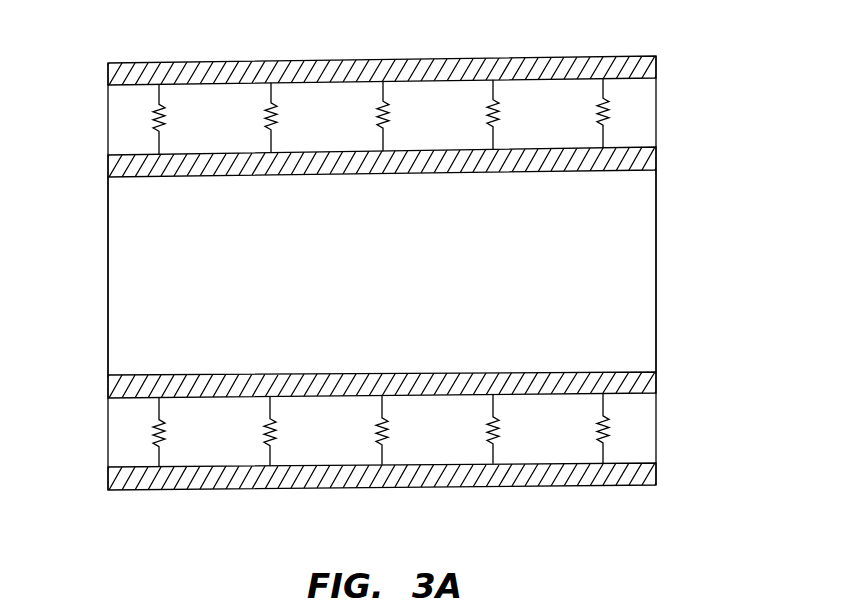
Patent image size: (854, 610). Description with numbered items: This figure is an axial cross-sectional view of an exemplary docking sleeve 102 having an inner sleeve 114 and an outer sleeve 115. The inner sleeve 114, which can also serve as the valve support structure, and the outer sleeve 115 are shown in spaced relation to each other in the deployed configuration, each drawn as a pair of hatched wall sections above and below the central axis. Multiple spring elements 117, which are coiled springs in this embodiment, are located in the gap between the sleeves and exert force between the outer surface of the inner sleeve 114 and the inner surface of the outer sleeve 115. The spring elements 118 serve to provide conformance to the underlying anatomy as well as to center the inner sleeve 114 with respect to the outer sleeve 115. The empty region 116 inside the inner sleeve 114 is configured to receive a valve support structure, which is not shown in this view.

The docking sleeve 102 is at (710, 178).
The inner sleeve 114 is at (360, 173).
The outer sleeve 115 is at (387, 57).
The empty region 116 is at (140, 333).
The spring elements 117 is at (154, 122).
The spring elements 118 is at (107, 435).